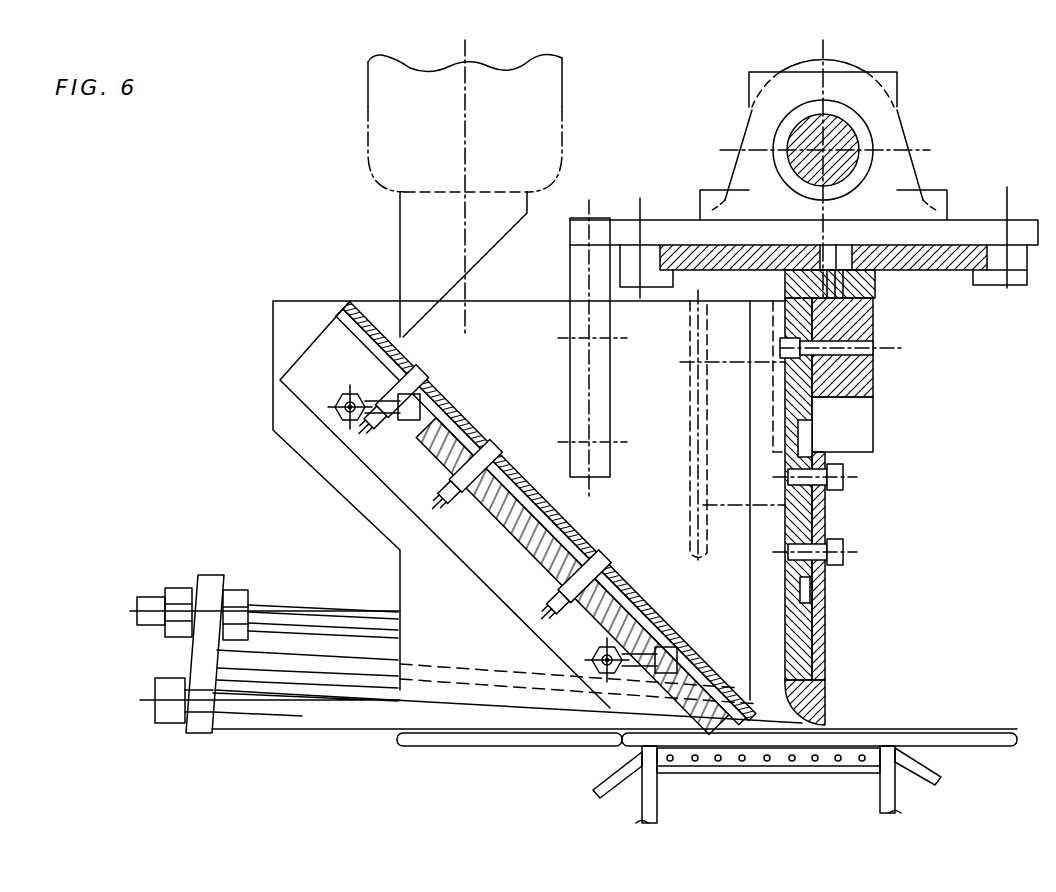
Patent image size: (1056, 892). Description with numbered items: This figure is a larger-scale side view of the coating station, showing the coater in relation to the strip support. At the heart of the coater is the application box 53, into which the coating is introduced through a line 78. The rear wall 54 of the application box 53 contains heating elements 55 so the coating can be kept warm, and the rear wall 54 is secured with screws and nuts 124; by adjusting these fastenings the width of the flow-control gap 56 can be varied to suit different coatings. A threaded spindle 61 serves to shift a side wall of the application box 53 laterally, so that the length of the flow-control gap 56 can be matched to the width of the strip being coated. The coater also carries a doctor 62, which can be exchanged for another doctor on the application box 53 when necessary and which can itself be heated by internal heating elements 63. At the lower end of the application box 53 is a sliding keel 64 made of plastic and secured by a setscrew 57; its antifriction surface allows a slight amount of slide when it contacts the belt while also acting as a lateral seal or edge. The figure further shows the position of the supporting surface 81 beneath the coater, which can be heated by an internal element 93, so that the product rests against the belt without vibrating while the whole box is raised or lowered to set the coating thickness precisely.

The application box 53 is at (543, 435).
The rear wall 54 is at (368, 358).
The heating elements 55 is at (437, 460).
The flow-control gap 56 is at (772, 707).
The setscrew 57 is at (317, 605).
The threaded spindle 61 is at (855, 135).
The doctor 62 is at (820, 697).
The internal heating elements 63 is at (807, 523).
The sliding keel 64 is at (333, 717).
The line 78 is at (542, 93).
The supporting surface 81 is at (887, 783).
The internal element 93 is at (697, 760).
The screws and nuts 124 is at (335, 407).